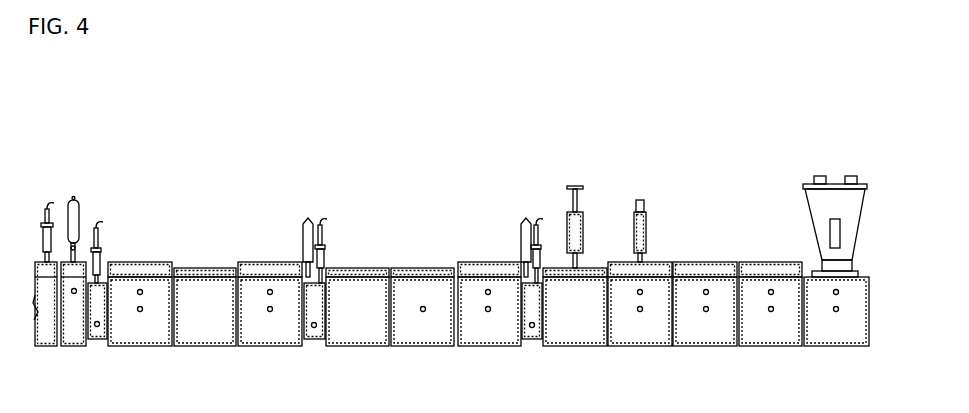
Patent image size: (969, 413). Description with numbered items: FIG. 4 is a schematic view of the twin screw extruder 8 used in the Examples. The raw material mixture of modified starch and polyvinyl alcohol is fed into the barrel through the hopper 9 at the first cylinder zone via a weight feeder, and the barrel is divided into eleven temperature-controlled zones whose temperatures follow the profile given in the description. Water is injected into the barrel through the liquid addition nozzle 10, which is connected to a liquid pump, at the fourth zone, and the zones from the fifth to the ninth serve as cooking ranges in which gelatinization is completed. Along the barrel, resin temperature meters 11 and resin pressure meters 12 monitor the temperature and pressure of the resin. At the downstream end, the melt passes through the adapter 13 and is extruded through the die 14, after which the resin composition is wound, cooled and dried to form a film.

The twin screw extruder 8 is at (831, 128).
The hopper 9 is at (822, 207).
The liquid addition nozzle 10 is at (583, 215).
The resin temperature meter 11 is at (44, 240).
The resin pressure meter 12 is at (81, 208).
The adapter 13 is at (98, 341).
The die 14 is at (49, 346).